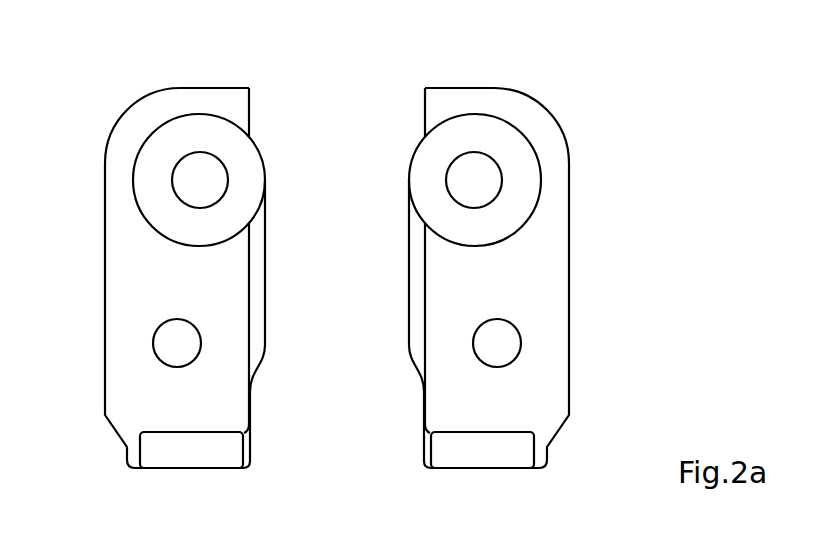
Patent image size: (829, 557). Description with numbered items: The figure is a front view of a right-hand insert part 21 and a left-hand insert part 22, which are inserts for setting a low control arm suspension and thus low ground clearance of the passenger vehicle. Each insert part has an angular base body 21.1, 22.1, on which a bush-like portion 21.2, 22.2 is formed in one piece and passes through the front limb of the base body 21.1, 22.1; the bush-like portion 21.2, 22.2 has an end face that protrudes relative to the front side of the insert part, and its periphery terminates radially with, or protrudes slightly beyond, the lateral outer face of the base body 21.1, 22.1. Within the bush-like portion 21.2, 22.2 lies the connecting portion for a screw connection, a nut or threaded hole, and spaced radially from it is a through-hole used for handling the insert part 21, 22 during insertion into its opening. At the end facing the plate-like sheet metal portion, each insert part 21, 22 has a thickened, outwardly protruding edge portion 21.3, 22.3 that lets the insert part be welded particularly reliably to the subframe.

The insert part 21 is at (149, 69).
The base body 21.1 is at (127, 292).
The bush-like portion 21.2 is at (160, 162).
The edge portion 21.3 is at (177, 452).
The insert part 22 is at (525, 69).
The base body 22.1 is at (548, 292).
The bush-like portion 22.2 is at (513, 160).
The edge portion 22.3 is at (498, 452).